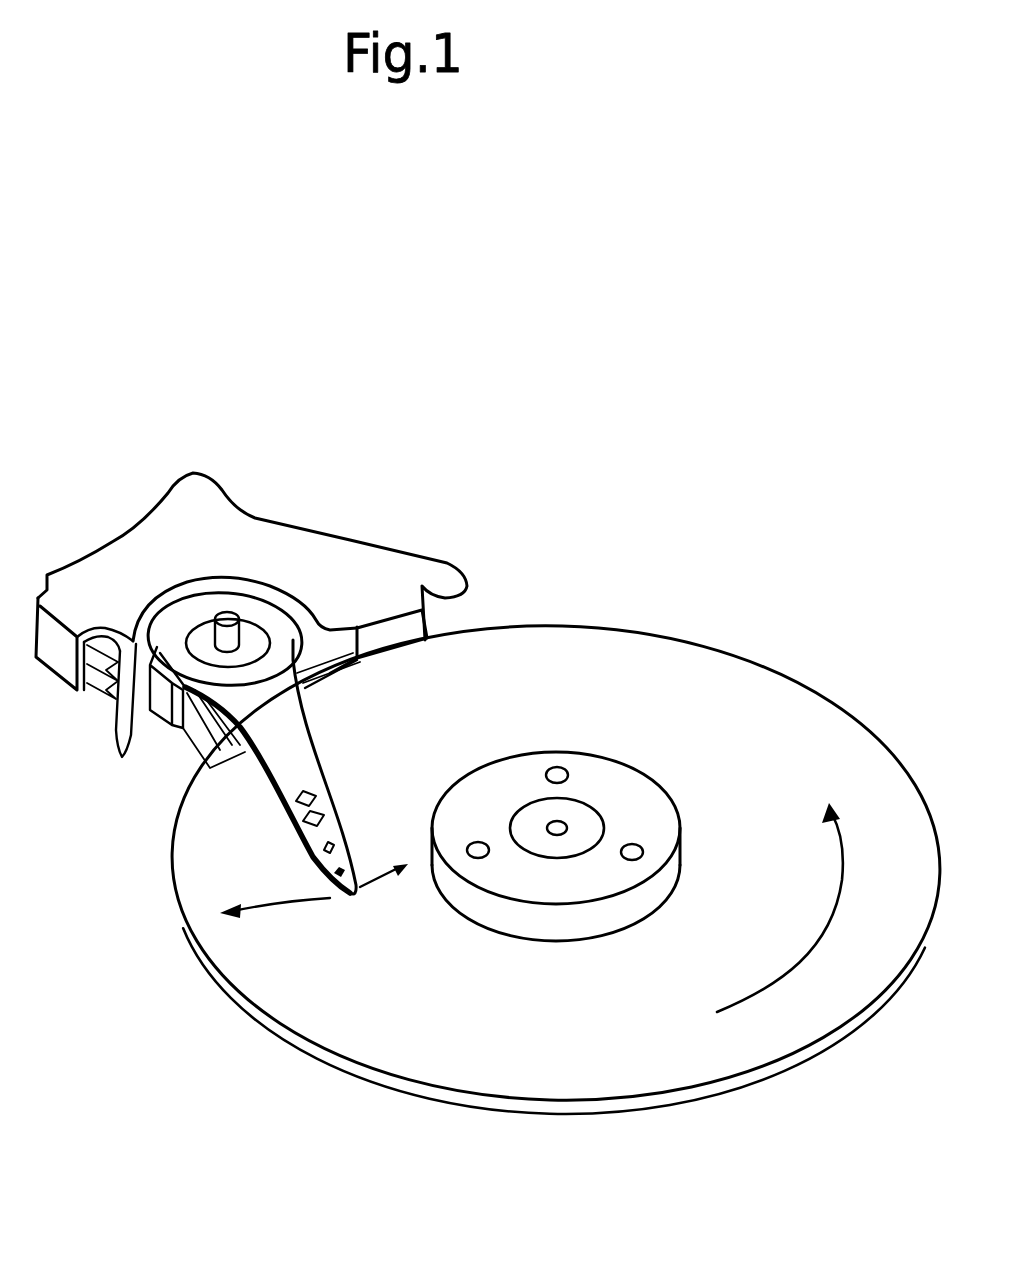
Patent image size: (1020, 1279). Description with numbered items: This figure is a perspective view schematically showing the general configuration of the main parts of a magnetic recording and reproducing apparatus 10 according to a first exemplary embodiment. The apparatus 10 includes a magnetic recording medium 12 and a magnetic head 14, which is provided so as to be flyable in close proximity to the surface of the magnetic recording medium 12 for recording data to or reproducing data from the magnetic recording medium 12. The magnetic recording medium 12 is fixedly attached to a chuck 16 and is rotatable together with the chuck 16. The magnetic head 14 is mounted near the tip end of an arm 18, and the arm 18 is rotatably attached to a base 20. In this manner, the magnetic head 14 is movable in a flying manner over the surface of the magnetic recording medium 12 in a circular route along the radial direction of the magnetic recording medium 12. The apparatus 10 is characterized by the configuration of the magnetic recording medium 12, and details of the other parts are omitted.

The magnetic recording and reproducing apparatus 10 is at (643, 583).
The magnetic recording medium 12 is at (752, 680).
The magnetic head 14 is at (352, 895).
The chuck 16 is at (545, 925).
The arm 18 is at (306, 832).
The base 20 is at (288, 568).